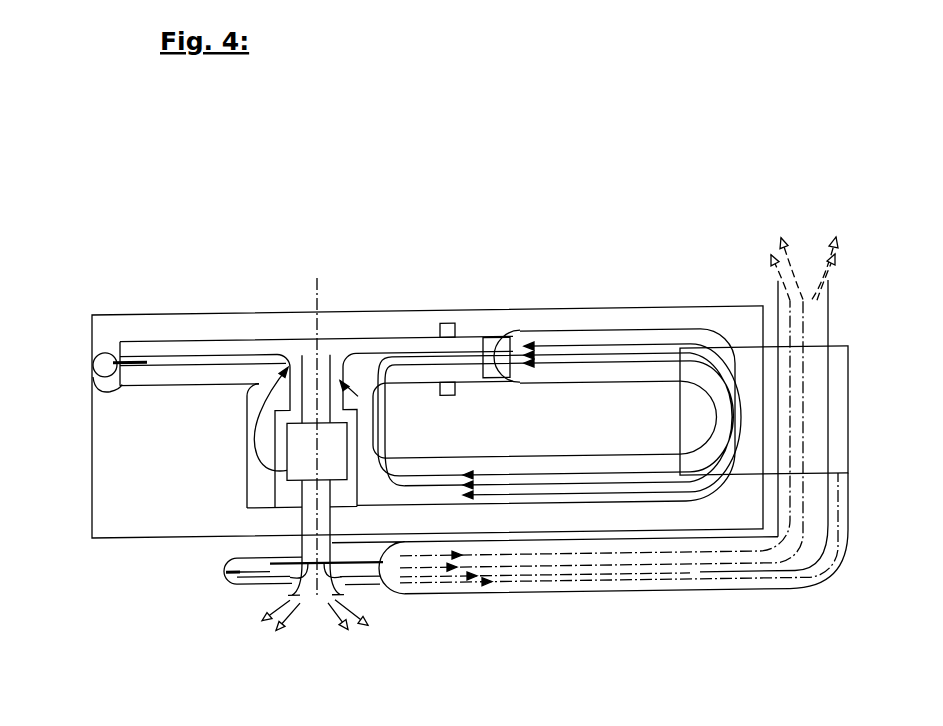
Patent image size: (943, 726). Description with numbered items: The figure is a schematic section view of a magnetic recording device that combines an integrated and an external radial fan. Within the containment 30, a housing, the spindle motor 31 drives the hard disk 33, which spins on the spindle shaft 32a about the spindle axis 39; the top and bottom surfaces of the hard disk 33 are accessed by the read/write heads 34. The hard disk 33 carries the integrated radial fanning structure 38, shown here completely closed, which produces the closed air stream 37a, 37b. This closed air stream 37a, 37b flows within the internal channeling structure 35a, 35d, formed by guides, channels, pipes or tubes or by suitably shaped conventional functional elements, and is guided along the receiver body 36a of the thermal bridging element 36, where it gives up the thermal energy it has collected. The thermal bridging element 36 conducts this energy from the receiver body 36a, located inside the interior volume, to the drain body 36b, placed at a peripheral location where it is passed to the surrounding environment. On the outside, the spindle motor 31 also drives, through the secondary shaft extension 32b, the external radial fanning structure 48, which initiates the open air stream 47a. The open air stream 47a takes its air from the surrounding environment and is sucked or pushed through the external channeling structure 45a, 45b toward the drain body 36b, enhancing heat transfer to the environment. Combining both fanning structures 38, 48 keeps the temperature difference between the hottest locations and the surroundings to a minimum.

The containment 30 is at (230, 314).
The spindle motor 31 is at (287, 472).
The spindle shaft 32a is at (320, 372).
The secondary shaft extension 32b is at (325, 520).
The hard disk 33 is at (177, 348).
The read/write heads 34 is at (443, 328).
The channeling structure 35a is at (562, 337).
The channeling structure 35d is at (118, 342).
The thermal bridging element 36 is at (763, 354).
The receiver body 36a is at (734, 352).
The drain body 36b is at (849, 505).
The closed air stream 37a is at (681, 482).
The closed air stream 37b is at (247, 440).
The integrated radial fanning structure 38 is at (92, 386).
The spindle axis 39 is at (316, 283).
The external channeling structure 45a is at (778, 300).
The external channeling structure 45b is at (223, 588).
The open air stream 47a is at (641, 578).
The external radial fanning structure 48 is at (360, 588).